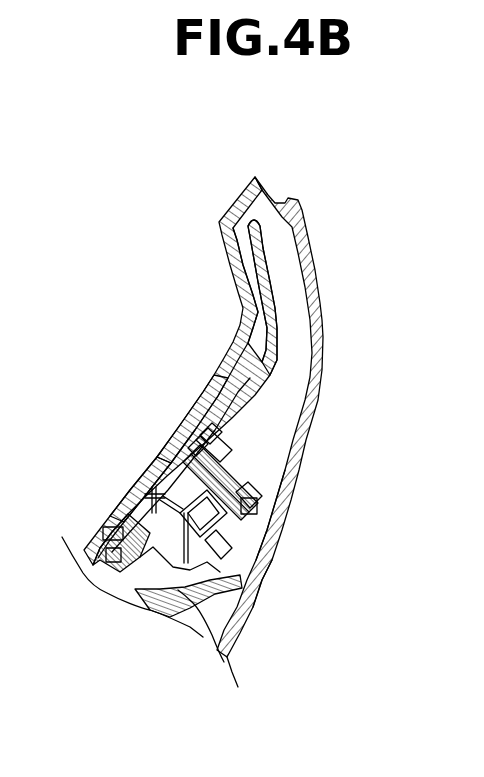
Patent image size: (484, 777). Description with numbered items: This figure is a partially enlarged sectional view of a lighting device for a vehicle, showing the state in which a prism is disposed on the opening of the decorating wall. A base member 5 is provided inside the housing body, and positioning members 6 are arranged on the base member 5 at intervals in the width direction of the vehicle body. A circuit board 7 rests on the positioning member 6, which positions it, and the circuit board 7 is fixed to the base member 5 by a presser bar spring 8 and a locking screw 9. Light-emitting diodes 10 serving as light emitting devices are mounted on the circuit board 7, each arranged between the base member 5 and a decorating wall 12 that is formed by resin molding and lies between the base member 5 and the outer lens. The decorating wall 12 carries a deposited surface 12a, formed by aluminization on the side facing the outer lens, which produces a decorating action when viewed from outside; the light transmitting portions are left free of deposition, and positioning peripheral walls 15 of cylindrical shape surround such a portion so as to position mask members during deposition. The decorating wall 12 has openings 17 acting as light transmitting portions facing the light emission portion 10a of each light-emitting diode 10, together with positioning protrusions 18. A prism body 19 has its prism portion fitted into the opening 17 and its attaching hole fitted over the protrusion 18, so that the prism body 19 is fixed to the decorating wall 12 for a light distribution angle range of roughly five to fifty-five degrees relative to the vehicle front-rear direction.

The base member 5 is at (270, 364).
The positioning member 6 is at (163, 455).
The circuit board 7 is at (131, 488).
The presser bar spring 8 is at (203, 637).
The locking screw 9 is at (141, 606).
The light-emitting diode 10 is at (265, 571).
The light emission portion 10a is at (276, 548).
The decorating wall 12 is at (230, 290).
The deposited surface 12a is at (277, 314).
The positioning peripheral wall 15 is at (228, 449).
The opening 17 is at (258, 502).
The positioning protrusion 18 is at (190, 424).
The prism body 19 is at (248, 482).